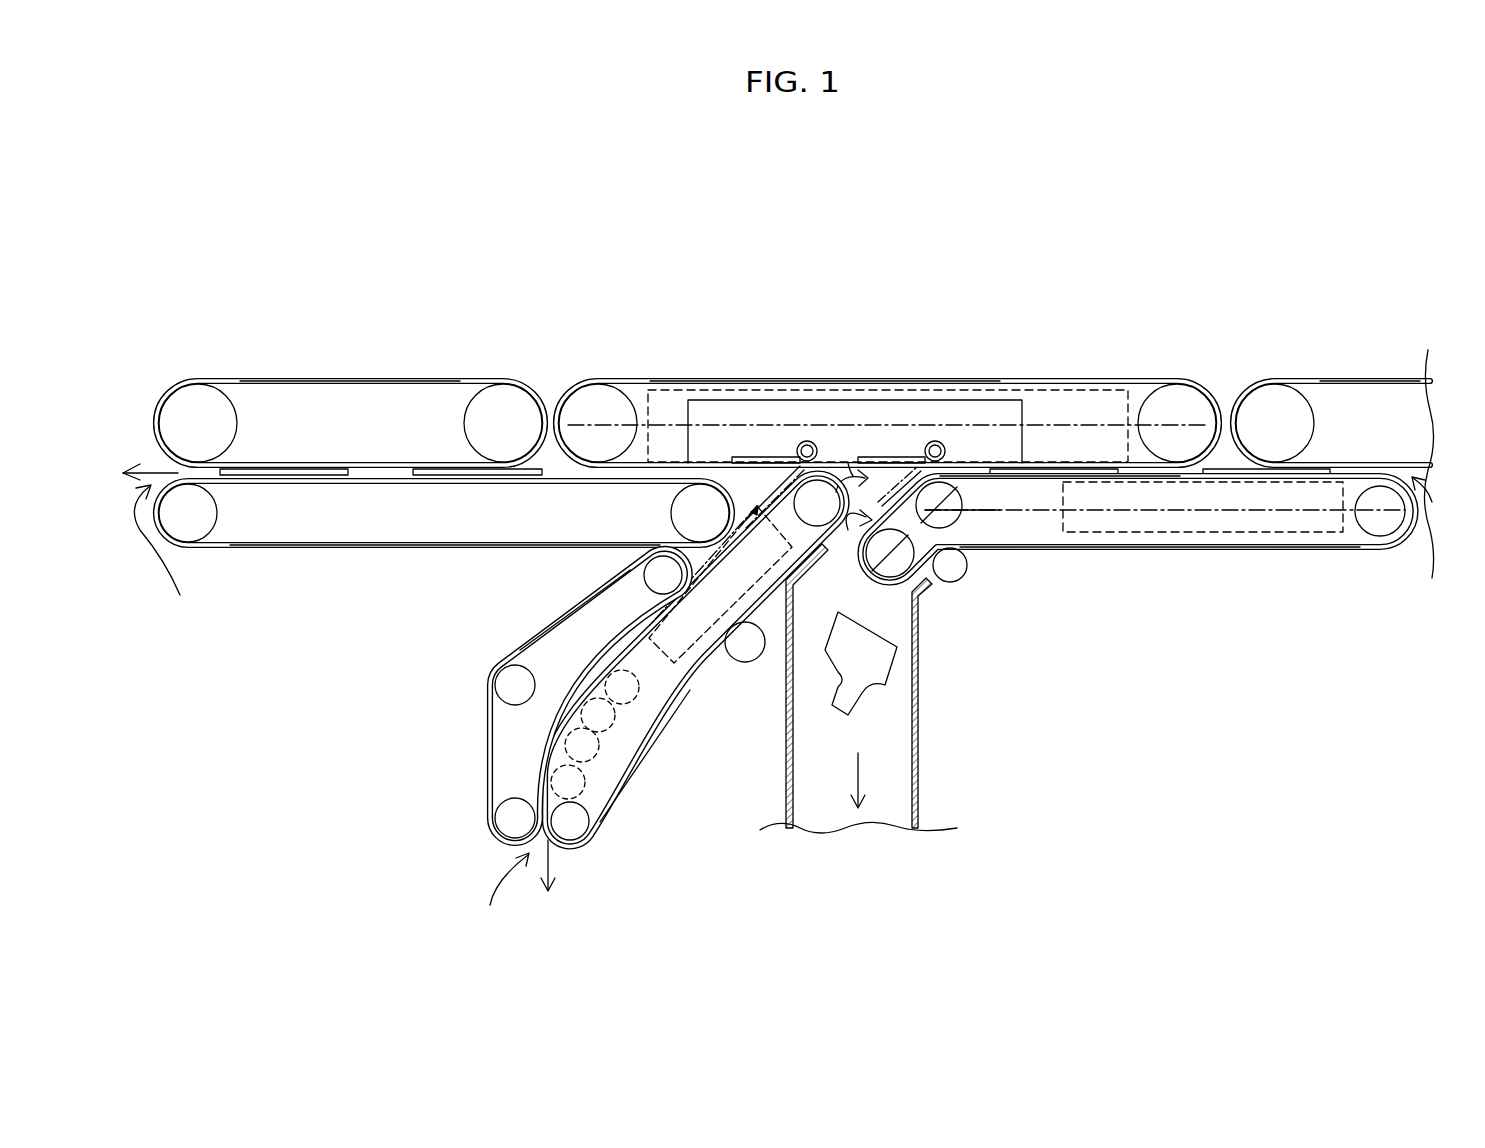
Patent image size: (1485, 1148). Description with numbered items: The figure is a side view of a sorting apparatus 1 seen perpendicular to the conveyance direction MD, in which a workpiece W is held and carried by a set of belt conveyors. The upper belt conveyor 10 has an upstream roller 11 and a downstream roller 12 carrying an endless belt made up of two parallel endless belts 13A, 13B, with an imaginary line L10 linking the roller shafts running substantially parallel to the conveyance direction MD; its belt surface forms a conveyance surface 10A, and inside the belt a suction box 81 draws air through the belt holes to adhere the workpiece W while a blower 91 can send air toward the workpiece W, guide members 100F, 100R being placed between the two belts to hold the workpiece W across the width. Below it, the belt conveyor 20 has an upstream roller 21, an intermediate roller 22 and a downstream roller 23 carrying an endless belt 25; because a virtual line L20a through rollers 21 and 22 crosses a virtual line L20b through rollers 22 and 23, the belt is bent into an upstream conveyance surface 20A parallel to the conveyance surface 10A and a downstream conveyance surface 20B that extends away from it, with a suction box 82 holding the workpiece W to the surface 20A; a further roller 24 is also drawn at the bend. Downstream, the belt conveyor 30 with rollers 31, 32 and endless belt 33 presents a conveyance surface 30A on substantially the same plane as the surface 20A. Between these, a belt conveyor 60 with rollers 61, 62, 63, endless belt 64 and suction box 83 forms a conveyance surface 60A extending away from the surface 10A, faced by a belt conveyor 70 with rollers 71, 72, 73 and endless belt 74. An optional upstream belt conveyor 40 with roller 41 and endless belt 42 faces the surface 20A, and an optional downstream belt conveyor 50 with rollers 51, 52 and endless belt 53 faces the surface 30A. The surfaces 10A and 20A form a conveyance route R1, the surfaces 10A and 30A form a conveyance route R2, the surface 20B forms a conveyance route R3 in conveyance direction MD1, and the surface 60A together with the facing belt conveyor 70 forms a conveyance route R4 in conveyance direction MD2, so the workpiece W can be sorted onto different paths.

The sorting apparatus 1 is at (1001, 190).
The belt conveyor 10 is at (1048, 356).
The conveyance surface 10A is at (832, 468).
The roller 11 is at (1178, 405).
The roller 12 is at (598, 412).
The endless belt 13A is at (668, 388).
The endless belt 13B is at (668, 389).
The guide member 100R is at (770, 455).
The guide member 100F is at (905, 456).
The blower 91 is at (850, 445).
The suction box 81 is at (965, 388).
The imaginary line L10 is at (1088, 423).
The belt conveyor 20 is at (1102, 552).
The conveyance surface 20A is at (1180, 480).
The conveyance surface 20B is at (850, 527).
The roller 21 is at (1376, 525).
The roller 22 is at (950, 515).
The roller 23 is at (895, 565).
The roller 24 is at (955, 572).
The endless belt 25 is at (1212, 551).
The suction box 82 is at (1243, 534).
The virtual line L20a is at (1293, 514).
The virtual line L20b is at (977, 537).
The belt conveyor 30 is at (412, 562).
The conveyance surface 30A is at (386, 462).
The roller 31 is at (688, 513).
The roller 32 is at (203, 515).
The endless belt 33 is at (262, 550).
The belt conveyor 40 is at (1400, 358).
The roller 41 is at (1283, 405).
The endless belt 42 is at (1358, 378).
The belt conveyor 50 is at (365, 340).
The roller 51 is at (505, 405).
The roller 52 is at (204, 405).
The endless belt 53 is at (310, 378).
The belt conveyor 60 is at (662, 782).
The conveyance surface 60A is at (618, 648).
The roller 61 is at (827, 515).
The roller 62 is at (573, 835).
The roller 63 is at (748, 650).
The endless belt 64 is at (622, 793).
The suction box 83 is at (708, 666).
The belt conveyor 70 is at (488, 758).
The roller 71 is at (655, 578).
The roller 72 is at (502, 818).
The roller 73 is at (502, 684).
The endless belt 74 is at (560, 626).
The workpiece W is at (857, 678).
The conveyance direction MD is at (145, 455).
The conveyance direction MD1 is at (834, 779).
The conveyance direction MD2 is at (548, 884).
The conveyance route R1 is at (1430, 540).
The conveyance route R2 is at (165, 557).
The conveyance route R3 is at (851, 850).
The conveyance route R4 is at (495, 894).